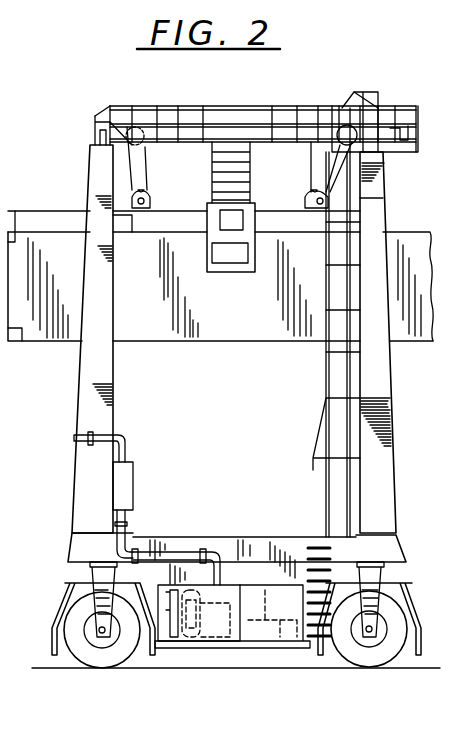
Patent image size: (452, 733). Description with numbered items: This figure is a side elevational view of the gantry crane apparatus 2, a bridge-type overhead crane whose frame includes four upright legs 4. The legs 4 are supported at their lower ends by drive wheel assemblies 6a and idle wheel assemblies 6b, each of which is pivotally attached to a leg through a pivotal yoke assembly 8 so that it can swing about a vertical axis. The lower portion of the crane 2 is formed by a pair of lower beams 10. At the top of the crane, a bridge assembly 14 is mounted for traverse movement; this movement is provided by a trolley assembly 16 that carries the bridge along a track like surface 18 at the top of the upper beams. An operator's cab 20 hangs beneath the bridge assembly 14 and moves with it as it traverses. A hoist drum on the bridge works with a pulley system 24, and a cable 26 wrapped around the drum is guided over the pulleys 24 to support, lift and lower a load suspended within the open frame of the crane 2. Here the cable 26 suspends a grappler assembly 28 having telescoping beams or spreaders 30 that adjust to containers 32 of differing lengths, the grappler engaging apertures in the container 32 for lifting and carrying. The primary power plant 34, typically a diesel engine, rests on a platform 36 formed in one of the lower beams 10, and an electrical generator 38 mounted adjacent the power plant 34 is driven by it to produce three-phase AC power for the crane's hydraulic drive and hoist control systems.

The gantry crane apparatus 2 is at (89, 108).
The upright legs 4 is at (88, 364).
The drive wheel assemblies 6a is at (105, 656).
The idle wheel assemblies 6b is at (337, 650).
The pivotal yoke assemblies 8 is at (90, 566).
The lower beams 10 is at (236, 543).
The bridge assembly 14 is at (266, 106).
The trolley assembly 16 is at (95, 126).
The track like surface 18 is at (93, 146).
The operator's cab 20 is at (230, 258).
The pulley system 24 is at (148, 191).
The cable 26 is at (147, 161).
The grappler assembly 28 is at (47, 222).
The telescoping beams or spreaders 30 is at (125, 222).
The container 32 is at (153, 328).
The power plant 34 is at (221, 664).
The platform 36 is at (263, 648).
The electrical generator 38 is at (266, 612).